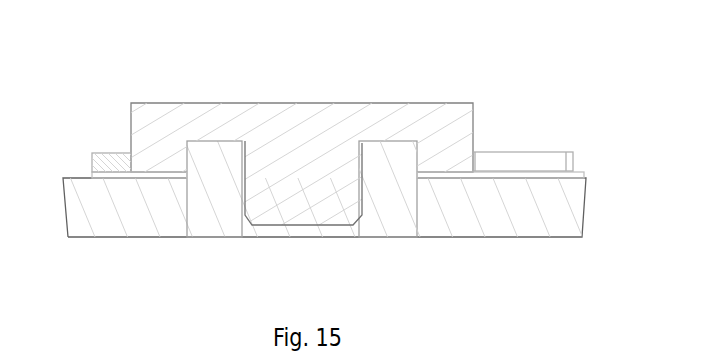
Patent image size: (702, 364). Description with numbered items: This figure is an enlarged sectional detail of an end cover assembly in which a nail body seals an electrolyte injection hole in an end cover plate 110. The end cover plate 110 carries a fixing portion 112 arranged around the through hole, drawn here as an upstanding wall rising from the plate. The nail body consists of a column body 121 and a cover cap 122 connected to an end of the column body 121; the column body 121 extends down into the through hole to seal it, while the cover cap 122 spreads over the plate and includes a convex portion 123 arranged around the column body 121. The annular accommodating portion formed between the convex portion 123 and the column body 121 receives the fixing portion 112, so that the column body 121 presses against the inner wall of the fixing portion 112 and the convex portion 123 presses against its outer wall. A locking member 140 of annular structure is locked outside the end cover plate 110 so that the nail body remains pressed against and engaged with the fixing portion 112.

The end cover plate 110 is at (175, 228).
The fixing portion 112 is at (220, 160).
The column body 121 is at (323, 208).
The cover cap 122 is at (392, 123).
The convex portion 123 is at (460, 155).
The locking member 140 is at (107, 157).